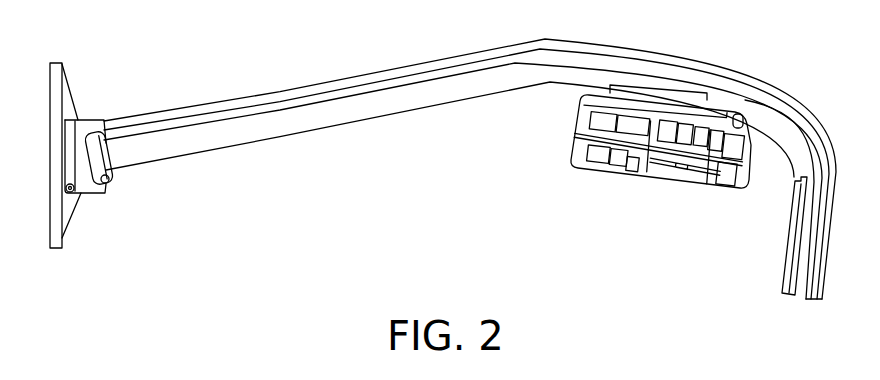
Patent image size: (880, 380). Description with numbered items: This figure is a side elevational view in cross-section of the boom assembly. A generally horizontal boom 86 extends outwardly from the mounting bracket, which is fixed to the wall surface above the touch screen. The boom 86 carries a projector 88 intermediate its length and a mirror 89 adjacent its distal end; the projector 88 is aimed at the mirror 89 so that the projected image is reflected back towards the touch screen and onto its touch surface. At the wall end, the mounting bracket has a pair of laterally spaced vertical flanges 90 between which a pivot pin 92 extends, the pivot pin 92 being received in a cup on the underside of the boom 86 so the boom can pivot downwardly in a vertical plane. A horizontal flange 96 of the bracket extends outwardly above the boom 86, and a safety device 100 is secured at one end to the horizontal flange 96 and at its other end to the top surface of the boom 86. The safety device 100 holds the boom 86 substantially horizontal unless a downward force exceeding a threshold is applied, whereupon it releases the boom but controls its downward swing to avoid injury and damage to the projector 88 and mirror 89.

The boom 86 is at (312, 120).
The projector 88 is at (603, 176).
The mirror 89 is at (783, 223).
The vertical flanges 90 is at (97, 180).
The pivot pin 92 is at (73, 192).
The horizontal flange 96 is at (78, 119).
The safety device 100 is at (121, 118).